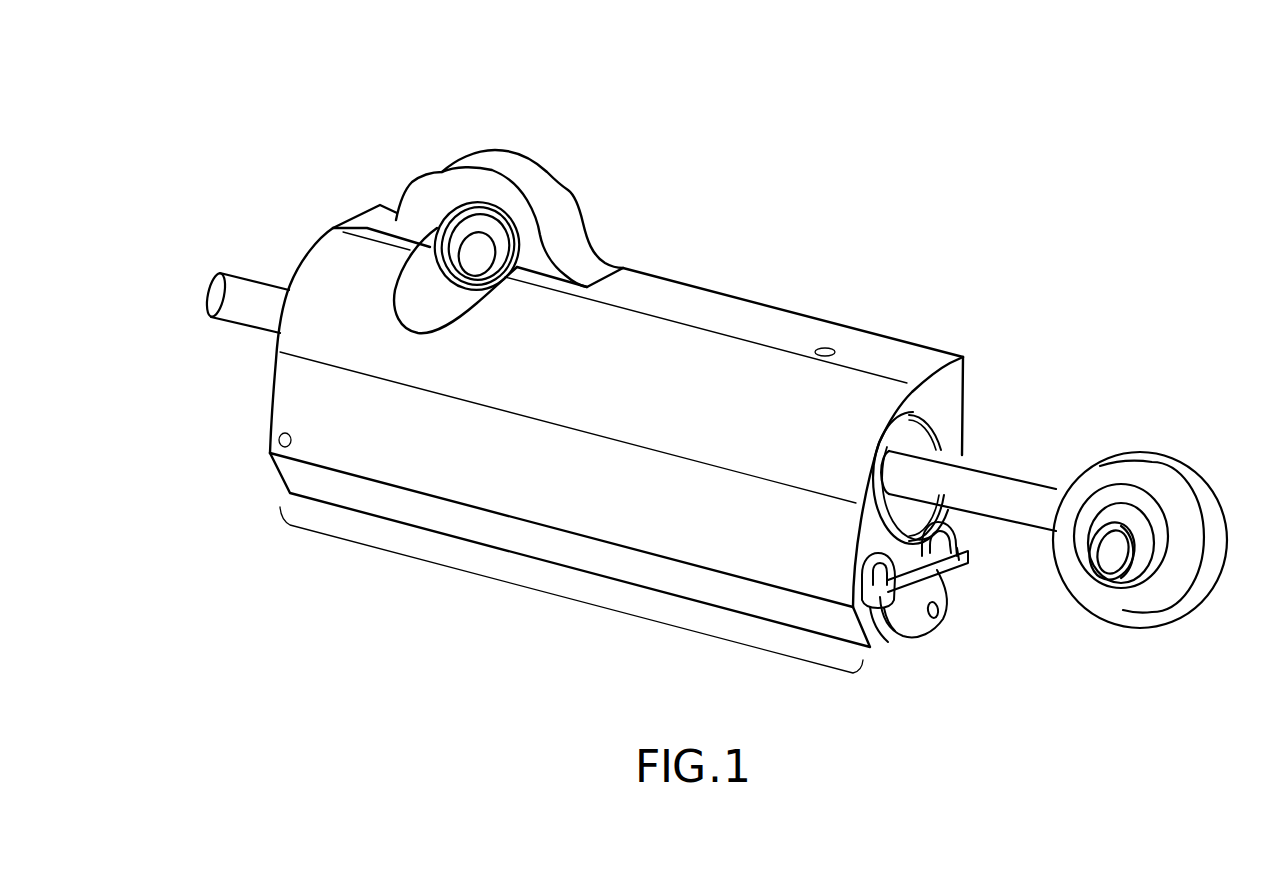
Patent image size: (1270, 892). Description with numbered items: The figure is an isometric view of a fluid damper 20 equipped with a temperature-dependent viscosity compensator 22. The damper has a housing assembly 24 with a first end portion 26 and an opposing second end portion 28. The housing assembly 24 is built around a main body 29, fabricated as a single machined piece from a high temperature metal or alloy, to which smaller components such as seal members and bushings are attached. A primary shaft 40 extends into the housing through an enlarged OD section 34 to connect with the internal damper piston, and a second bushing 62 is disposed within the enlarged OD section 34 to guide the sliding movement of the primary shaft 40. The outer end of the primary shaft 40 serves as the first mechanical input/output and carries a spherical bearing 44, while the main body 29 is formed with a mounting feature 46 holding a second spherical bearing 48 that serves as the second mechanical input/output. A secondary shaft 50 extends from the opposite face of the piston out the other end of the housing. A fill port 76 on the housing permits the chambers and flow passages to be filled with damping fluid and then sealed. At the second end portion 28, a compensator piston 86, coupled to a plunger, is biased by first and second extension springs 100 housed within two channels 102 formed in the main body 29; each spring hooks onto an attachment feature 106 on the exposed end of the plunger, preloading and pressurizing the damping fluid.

The fluid damper 20 is at (241, 163).
The temperature-dependent viscosity compensator 22 is at (553, 596).
The housing assembly 24 is at (776, 296).
The first end portion 26 is at (336, 240).
The second end portion 28 is at (927, 352).
The main body 29 is at (682, 290).
The enlarged OD section 34 is at (935, 433).
The primary shaft 40 is at (1035, 491).
The spherical bearing 44 is at (1132, 512).
The mounting feature 46 is at (443, 180).
The second spherical bearing 48 is at (510, 240).
The secondary shaft 50 is at (240, 282).
The second bushing 62 is at (907, 437).
The fill port 76 is at (826, 347).
The compensator piston 86 is at (910, 640).
The extension springs 100 is at (957, 552).
The channels 102 is at (945, 520).
The attachment feature 106 is at (963, 560).